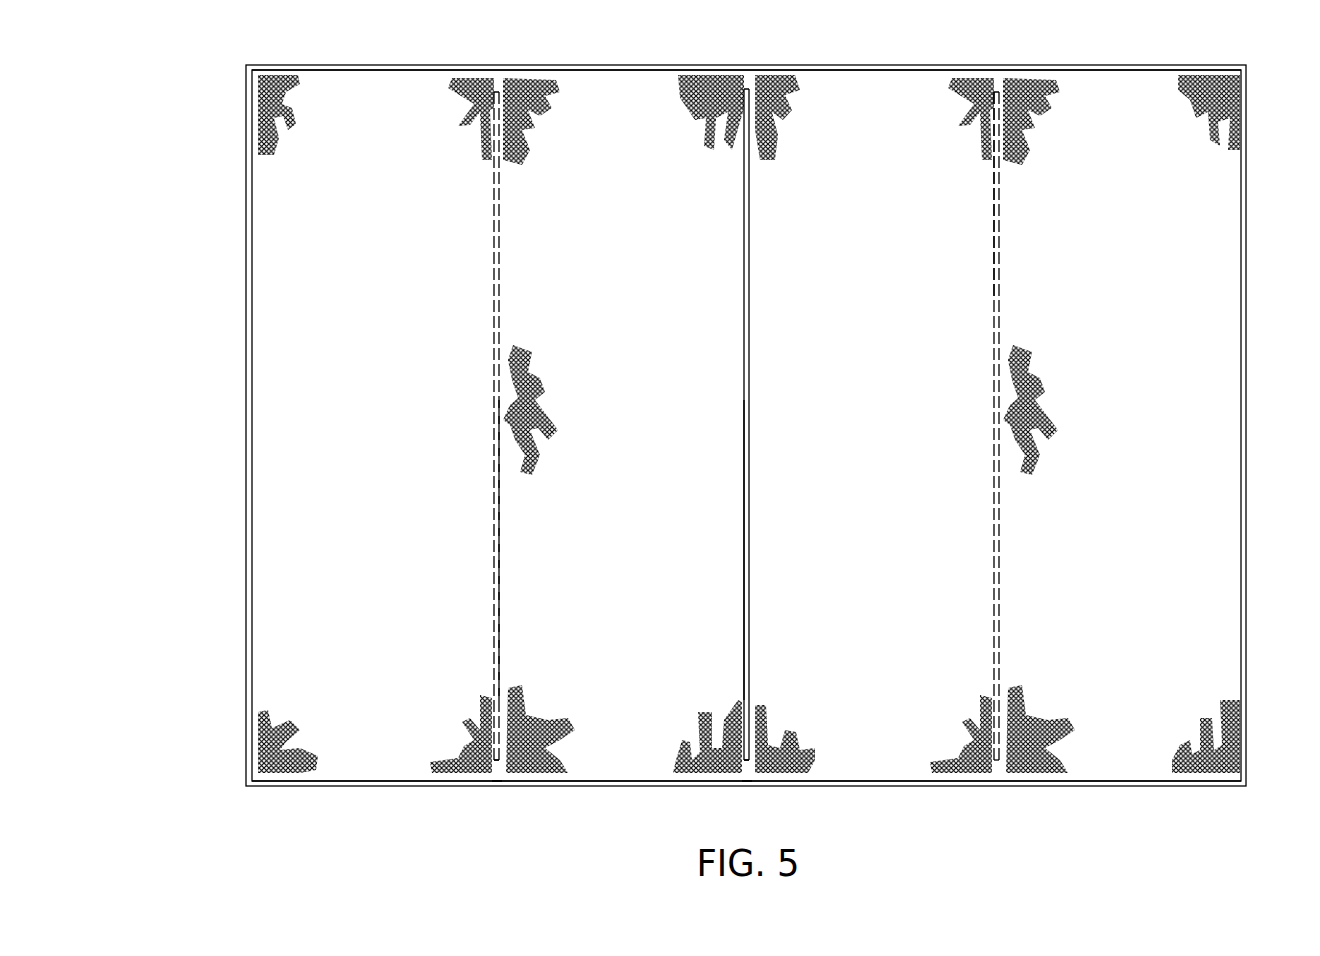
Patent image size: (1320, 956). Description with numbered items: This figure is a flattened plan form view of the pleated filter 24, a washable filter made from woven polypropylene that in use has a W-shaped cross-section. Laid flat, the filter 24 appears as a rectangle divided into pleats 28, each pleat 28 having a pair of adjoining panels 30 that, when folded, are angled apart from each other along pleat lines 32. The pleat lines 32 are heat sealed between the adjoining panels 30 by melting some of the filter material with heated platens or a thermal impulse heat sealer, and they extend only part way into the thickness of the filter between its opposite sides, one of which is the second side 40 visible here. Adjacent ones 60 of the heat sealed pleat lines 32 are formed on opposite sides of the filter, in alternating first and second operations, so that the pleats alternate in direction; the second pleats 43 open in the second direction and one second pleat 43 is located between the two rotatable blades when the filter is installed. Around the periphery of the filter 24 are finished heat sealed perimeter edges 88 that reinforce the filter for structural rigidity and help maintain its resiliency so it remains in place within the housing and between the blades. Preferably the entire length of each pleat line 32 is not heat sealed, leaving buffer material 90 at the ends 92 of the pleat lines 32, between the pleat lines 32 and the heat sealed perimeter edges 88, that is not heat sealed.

The pleated filter 24 is at (250, 796).
The pleats 28 is at (358, 654).
The adjoining panels 30 is at (384, 412).
The pleat lines 32 is at (491, 251).
The second side 40 is at (1142, 76).
The second pleats 43 is at (1000, 212).
The adjacent ones of the heat sealed pleat lines 60 is at (500, 568).
The heat sealed perimeter edges 88 is at (1246, 603).
The buffer material 90 is at (497, 781).
The ends of the pleat lines 92 is at (552, 722).